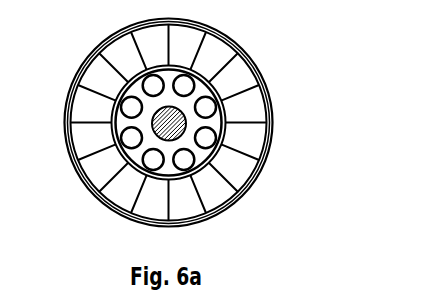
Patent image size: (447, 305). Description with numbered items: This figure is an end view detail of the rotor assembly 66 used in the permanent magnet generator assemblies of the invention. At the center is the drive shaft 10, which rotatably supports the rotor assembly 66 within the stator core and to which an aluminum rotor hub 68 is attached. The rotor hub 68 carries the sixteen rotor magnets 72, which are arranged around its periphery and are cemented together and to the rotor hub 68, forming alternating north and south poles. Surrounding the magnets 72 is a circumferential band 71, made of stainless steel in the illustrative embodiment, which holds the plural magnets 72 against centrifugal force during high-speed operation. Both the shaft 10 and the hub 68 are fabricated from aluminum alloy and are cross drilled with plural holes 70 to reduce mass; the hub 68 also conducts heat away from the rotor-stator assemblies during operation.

The drive shaft 10 is at (90, 65).
The rotor assembly 66 is at (91, 253).
The rotor hub 68 is at (73, 113).
The holes 70 is at (143, 156).
The circumferential band 71 is at (88, 191).
The rotor magnets 72 is at (153, 110).